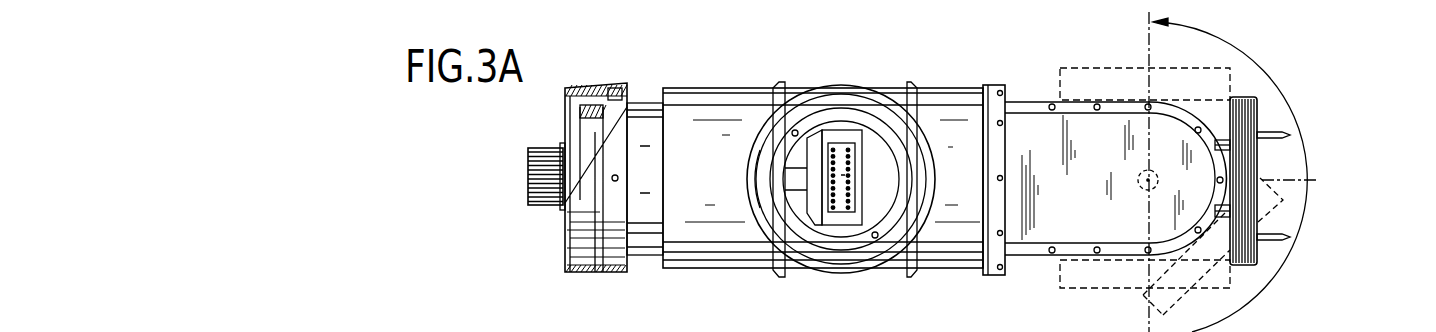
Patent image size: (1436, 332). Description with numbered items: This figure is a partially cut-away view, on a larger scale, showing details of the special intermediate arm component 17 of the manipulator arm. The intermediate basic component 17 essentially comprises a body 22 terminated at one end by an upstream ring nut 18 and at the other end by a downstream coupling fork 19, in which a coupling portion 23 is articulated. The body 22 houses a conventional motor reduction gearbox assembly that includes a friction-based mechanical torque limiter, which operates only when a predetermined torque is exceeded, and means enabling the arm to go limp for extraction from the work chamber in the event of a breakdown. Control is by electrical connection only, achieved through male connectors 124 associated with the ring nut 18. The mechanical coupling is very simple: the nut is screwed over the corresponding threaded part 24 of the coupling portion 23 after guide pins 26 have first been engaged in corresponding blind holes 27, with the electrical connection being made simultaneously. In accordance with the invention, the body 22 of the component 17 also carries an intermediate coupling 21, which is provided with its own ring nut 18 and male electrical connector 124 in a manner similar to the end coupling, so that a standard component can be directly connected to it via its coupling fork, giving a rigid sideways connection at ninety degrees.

The intermediate basic component 17 is at (708, 80).
The ring nut 18 is at (566, 253).
The coupling fork 19 is at (1048, 222).
The intermediate unit 21 is at (757, 238).
The body 22 is at (695, 250).
The coupling portion 23 is at (1219, 222).
The threaded part 24 is at (1243, 97).
The guide pins 26 is at (1277, 132).
The blind holes 27 is at (877, 240).
The male connectors 124 is at (540, 212).